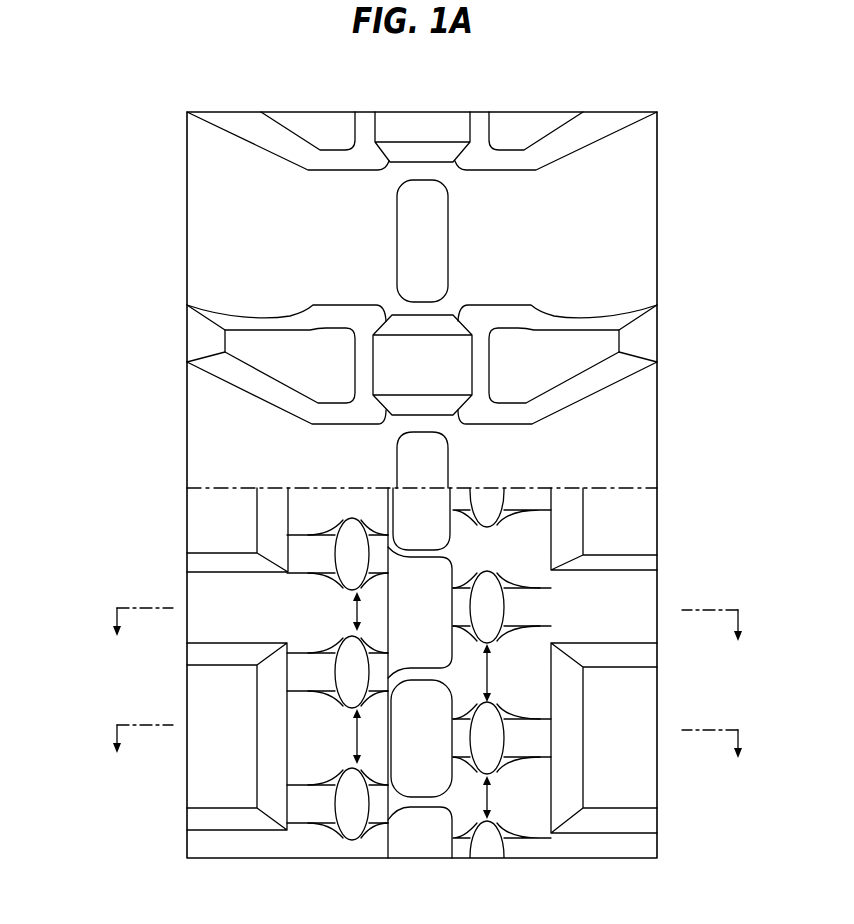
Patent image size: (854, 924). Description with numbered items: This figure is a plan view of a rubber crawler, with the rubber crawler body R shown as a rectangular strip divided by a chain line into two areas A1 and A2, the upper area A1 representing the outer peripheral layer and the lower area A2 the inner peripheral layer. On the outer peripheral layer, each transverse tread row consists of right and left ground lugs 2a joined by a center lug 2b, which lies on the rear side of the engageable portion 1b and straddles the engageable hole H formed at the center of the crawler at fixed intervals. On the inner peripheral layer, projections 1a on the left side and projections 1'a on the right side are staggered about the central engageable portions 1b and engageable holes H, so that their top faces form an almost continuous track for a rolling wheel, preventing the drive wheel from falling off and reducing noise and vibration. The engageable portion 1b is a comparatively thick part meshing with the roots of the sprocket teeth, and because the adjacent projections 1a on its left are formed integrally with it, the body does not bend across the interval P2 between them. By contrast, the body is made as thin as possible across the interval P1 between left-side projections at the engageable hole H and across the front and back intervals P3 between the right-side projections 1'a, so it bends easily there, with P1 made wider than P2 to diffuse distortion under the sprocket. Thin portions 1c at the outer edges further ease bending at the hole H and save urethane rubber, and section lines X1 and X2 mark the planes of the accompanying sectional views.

The rubber crawler body R is at (665, 238).
The first tread pattern area A1 is at (352, 409).
The second tread pattern area A2 is at (65, 688).
The ground lug 2a is at (277, 355).
The center lug 2b is at (424, 133).
The engageable hole H is at (424, 273).
The projection 1a is at (347, 672).
The projection 1'a is at (549, 686).
The engageable portion 1b is at (424, 637).
The thin portion 1c is at (210, 522).
The interval P1 is at (341, 736).
The interval P2 is at (340, 611).
The interval P3 is at (503, 732).
The section line X1 is at (428, 763).
The section line X2 is at (428, 645).